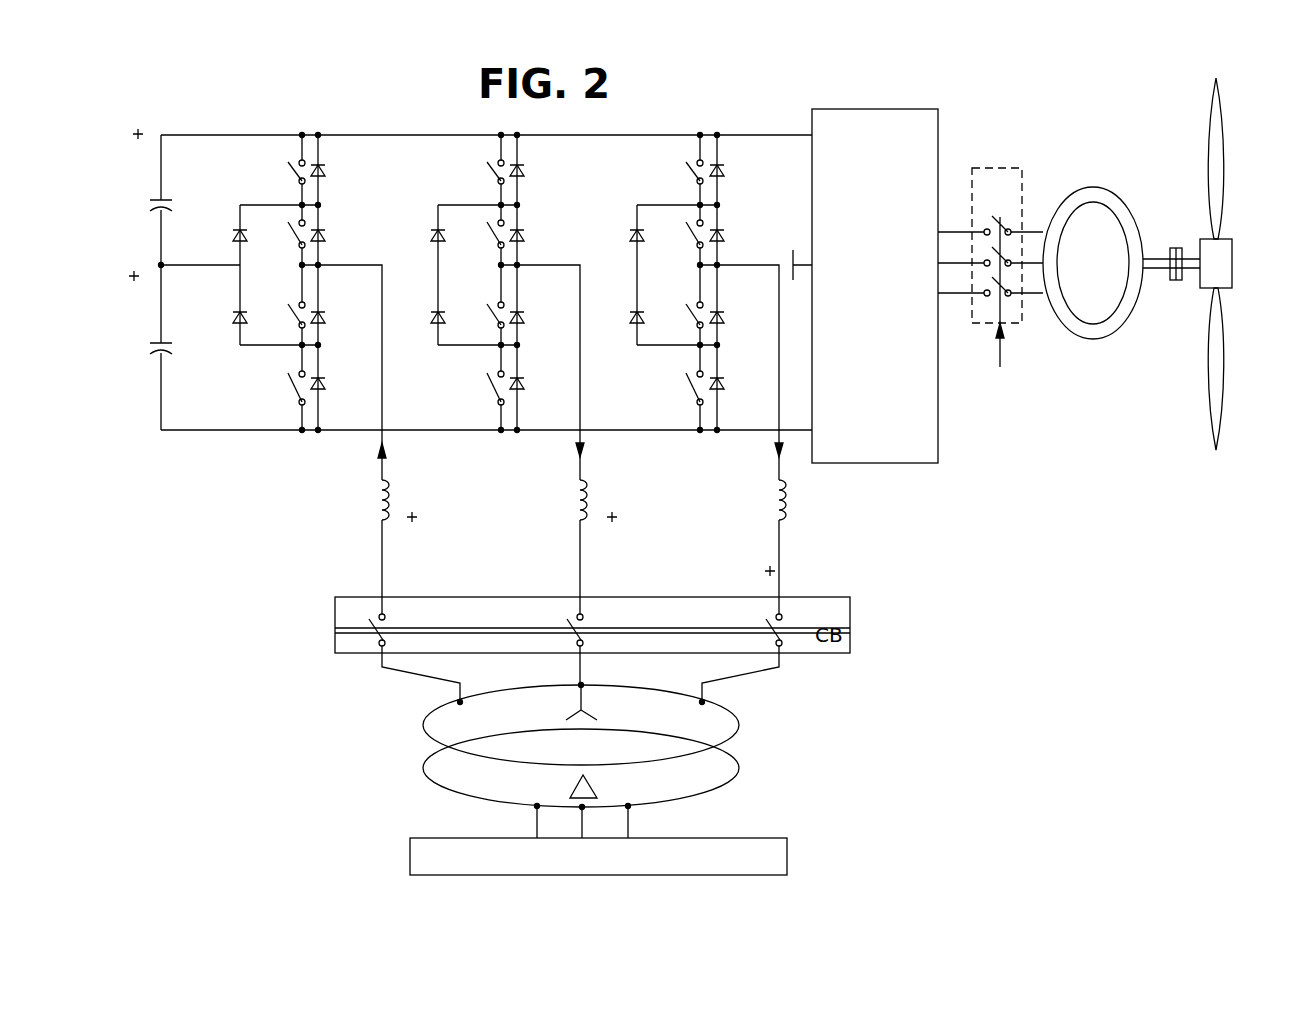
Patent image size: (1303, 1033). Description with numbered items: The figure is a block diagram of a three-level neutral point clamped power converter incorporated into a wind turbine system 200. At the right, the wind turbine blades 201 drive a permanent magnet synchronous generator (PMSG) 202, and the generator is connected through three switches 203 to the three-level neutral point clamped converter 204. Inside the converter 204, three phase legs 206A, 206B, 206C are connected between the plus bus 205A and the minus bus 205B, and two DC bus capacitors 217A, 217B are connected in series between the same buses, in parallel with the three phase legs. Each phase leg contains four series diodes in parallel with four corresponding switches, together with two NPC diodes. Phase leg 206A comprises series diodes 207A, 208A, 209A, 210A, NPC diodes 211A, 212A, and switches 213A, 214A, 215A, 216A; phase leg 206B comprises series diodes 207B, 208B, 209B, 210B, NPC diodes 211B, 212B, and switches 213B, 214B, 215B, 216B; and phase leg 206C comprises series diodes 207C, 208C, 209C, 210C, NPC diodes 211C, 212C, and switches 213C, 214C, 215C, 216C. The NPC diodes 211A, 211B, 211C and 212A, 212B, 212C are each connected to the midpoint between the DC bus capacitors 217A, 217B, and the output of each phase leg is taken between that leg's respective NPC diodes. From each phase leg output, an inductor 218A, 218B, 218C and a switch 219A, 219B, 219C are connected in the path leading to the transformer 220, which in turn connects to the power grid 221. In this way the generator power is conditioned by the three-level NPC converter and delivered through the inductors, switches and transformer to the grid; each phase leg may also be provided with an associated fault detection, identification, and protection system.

The wind turbine system 200 is at (140, 118).
The wind turbine blades 201 is at (1232, 258).
The permanent magnet synchronous generator 202 is at (1090, 187).
The three switches 203 is at (985, 166).
The three-level neutral point clamped converter 204 is at (938, 432).
The plus bus 205A is at (782, 128).
The minus bus 205B is at (699, 466).
The phase leg 206A is at (268, 374).
The phase leg 206B is at (482, 361).
The phase leg 206C is at (683, 374).
The series diode 207A is at (325, 177).
The series diode 207B is at (525, 177).
The series diode 207C is at (725, 176).
The series diode 208A is at (326, 238).
The series diode 208B is at (525, 238).
The series diode 208C is at (727, 238).
The series diode 209A is at (350, 305).
The series diode 209B is at (549, 305).
The series diode 209C is at (745, 305).
The series diode 210A is at (346, 366).
The series diode 210B is at (525, 383).
The series diode 210C is at (744, 366).
The NPC diode 211A is at (236, 242).
The NPC diode 211B is at (432, 237).
The NPC diode 211C is at (631, 237).
The NPC diode 212A is at (233, 318).
The NPC diode 212B is at (432, 320).
The NPC diode 212C is at (631, 320).
The switch 213A is at (293, 170).
The switch 213B is at (492, 170).
The switch 213C is at (691, 170).
The switch 214A is at (293, 233).
The switch 214B is at (492, 236).
The switch 214C is at (691, 236).
The switch 215A is at (295, 326).
The switch 215B is at (494, 330).
The switch 215C is at (693, 330).
The switch 216A is at (294, 392).
The switch 216B is at (493, 392).
The switch 216C is at (692, 392).
The DC bus capacitor 217A is at (156, 198).
The DC bus capacitor 217B is at (158, 341).
The inductor 218A is at (377, 495).
The inductor 218B is at (570, 506).
The inductor 218C is at (790, 510).
The switch 219A is at (372, 632).
The switch 219B is at (570, 636).
The switch 219C is at (785, 640).
The transformer 220 is at (740, 724).
The power grid 221 is at (787, 858).